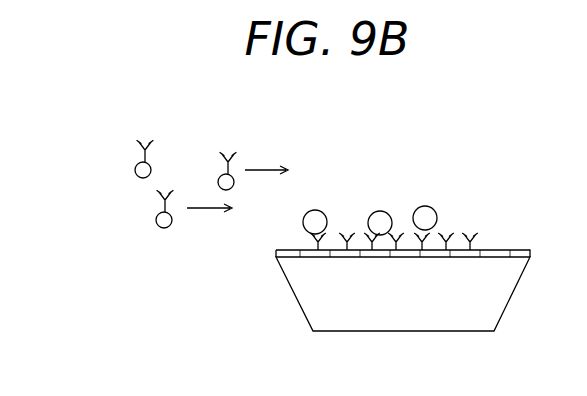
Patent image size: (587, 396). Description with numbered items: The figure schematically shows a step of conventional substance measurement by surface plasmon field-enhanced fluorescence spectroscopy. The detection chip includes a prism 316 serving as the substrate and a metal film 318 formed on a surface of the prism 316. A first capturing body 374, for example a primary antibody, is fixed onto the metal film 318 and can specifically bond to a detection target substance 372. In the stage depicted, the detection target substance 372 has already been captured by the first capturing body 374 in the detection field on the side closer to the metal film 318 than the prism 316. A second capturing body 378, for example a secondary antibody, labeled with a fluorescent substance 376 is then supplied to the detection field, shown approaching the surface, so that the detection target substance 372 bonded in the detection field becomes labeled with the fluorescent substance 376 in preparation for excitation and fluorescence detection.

The prism 316 is at (380, 332).
The metal film 318 is at (362, 258).
The detection target substance 372 is at (434, 208).
The first capturing body 374 is at (470, 233).
The fluorescent substance 376 is at (135, 166).
The second capturing body 378 is at (142, 146).